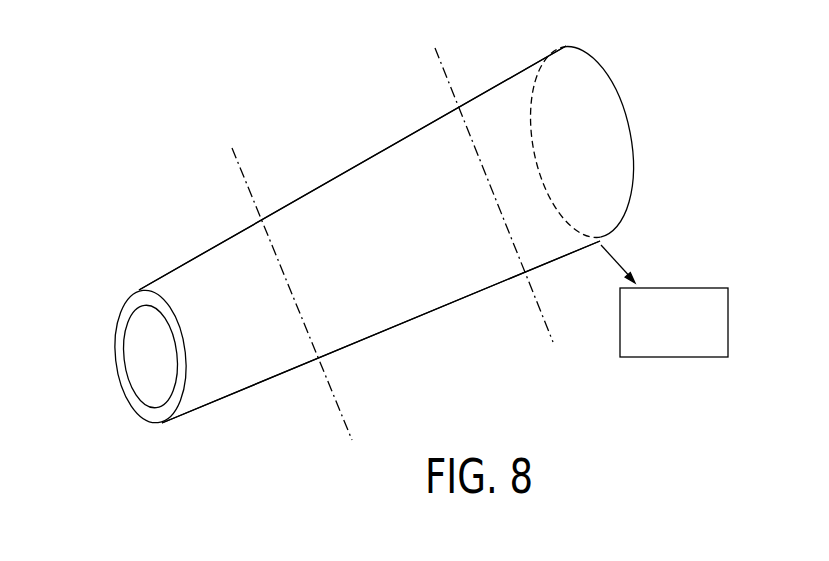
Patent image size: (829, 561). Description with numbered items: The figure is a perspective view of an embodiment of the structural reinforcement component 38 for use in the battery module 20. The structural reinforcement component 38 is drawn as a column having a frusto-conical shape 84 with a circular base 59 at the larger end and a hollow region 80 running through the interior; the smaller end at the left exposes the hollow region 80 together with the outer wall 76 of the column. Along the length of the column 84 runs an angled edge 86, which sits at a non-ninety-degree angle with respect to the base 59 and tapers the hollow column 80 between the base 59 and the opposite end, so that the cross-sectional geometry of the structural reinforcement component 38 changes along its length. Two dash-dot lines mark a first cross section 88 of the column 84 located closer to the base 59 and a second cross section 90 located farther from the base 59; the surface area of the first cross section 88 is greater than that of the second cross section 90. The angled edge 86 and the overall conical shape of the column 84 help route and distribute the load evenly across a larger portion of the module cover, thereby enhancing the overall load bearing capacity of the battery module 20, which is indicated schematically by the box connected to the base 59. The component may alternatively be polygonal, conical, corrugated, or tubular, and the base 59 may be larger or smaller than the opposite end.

The structural reinforcement component 38 is at (223, 85).
The outer wall 76 is at (160, 423).
The hollow region 80 is at (155, 342).
The base 59 is at (597, 62).
The frusto-conical shape 84 is at (350, 213).
The angled edge 86 is at (382, 333).
The first cross section 88 is at (435, 48).
The second cross section 90 is at (232, 148).
The battery module 20 is at (675, 357).